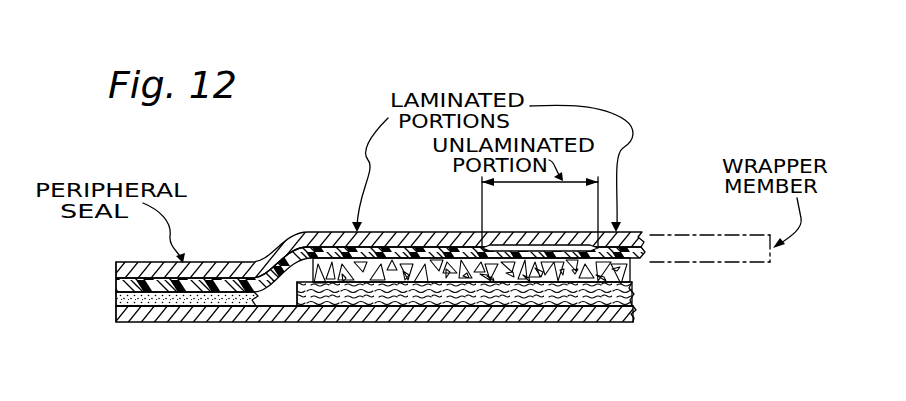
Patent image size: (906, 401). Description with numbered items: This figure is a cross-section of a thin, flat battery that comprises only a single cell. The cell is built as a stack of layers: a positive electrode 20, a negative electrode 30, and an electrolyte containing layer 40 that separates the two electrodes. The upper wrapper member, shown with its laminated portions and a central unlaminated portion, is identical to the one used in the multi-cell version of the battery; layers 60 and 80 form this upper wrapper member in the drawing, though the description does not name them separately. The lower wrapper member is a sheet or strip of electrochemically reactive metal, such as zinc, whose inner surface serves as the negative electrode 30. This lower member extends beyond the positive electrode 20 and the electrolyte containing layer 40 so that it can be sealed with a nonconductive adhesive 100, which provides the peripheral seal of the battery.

The positive electrode 20 is at (632, 279).
The negative electrode 30 is at (634, 318).
The electrolyte containing layer 40 is at (633, 296).
The cover sheet 60 is at (658, 217).
The adhesive lamina 80 is at (648, 253).
The nonconductive adhesive 100 is at (116, 298).